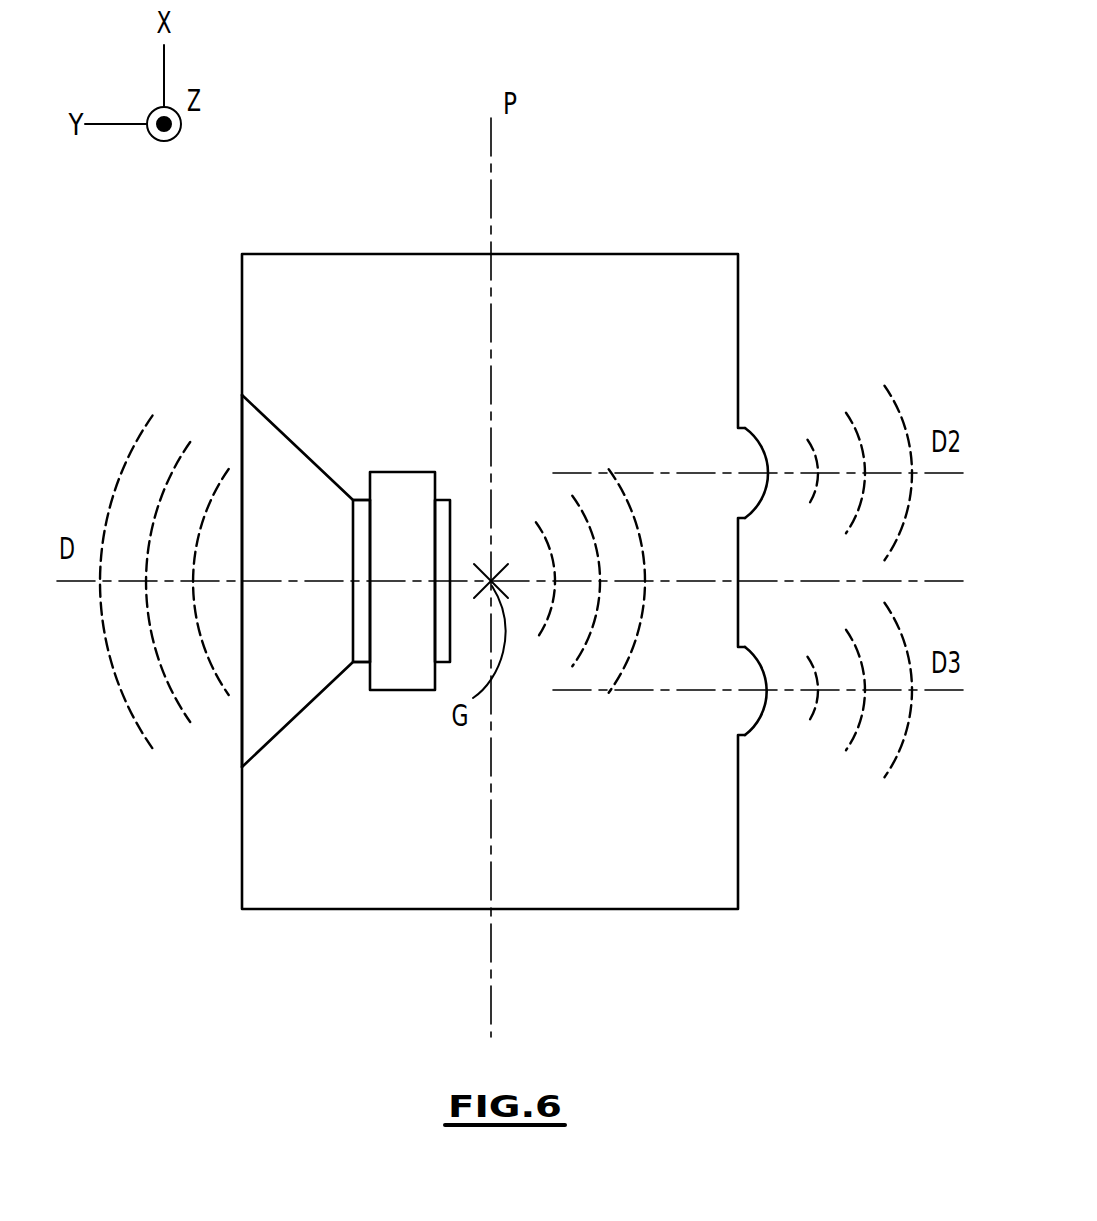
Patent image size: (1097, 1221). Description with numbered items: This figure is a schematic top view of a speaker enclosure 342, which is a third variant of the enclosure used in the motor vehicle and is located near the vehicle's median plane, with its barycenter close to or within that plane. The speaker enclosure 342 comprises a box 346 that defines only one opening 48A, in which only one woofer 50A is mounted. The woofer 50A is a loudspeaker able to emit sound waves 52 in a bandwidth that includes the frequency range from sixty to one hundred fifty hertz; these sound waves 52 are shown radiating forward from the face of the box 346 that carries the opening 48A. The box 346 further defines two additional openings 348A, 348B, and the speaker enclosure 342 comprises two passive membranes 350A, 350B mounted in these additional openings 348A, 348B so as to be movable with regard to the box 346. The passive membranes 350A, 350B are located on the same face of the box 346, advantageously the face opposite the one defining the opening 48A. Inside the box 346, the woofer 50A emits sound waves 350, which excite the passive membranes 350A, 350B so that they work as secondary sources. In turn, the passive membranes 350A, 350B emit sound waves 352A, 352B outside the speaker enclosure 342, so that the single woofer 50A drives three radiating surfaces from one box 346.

The speaker enclosure 342 is at (772, 178).
The box 346 is at (654, 254).
The additional opening 348A is at (720, 438).
The additional opening 348B is at (720, 725).
The sound waves 350 is at (643, 550).
The passive membrane 350A is at (758, 503).
The passive membrane 350B is at (758, 722).
The sound waves 352A is at (885, 398).
The sound waves 352B is at (888, 772).
The sound waves 52 is at (133, 440).
The opening 48A is at (226, 732).
The woofer 50A is at (305, 725).